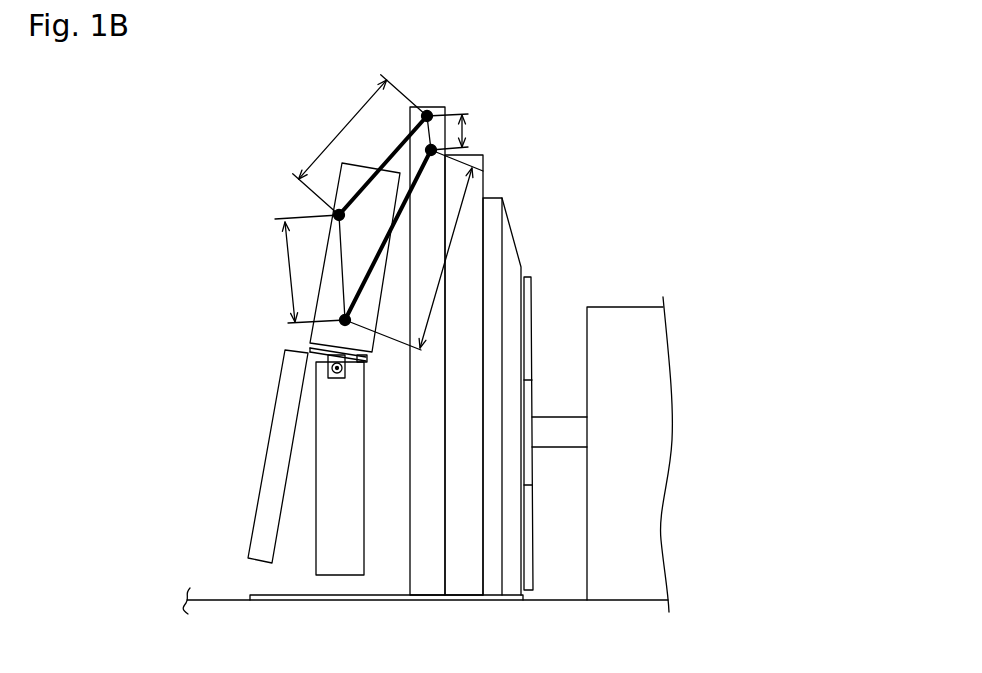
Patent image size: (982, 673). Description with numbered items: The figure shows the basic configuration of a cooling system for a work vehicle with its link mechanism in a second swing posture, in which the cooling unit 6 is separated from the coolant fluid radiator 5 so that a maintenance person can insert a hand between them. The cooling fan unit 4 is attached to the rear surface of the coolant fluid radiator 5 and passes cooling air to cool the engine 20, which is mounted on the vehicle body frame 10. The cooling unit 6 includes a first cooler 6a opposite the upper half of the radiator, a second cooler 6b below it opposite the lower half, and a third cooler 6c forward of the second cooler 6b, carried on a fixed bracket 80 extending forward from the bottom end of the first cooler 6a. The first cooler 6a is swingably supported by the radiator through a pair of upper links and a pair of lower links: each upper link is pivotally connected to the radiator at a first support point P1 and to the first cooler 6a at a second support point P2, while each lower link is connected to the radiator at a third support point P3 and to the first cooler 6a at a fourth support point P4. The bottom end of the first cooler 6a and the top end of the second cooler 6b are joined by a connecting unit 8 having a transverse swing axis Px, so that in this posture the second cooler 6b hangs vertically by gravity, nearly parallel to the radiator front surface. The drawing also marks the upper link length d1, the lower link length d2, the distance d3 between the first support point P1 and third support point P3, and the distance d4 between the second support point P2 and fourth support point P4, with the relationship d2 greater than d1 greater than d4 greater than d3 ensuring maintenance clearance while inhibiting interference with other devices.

The first support point P1 is at (427, 111).
The second support point P2 is at (333, 212).
The third support point P3 is at (431, 156).
The fourth support point P4 is at (348, 325).
The swing axis Px is at (337, 378).
The length of the upper links d1 is at (334, 134).
The length of the lower links d2 is at (427, 326).
The distance between the first support point and the third support point d3 is at (466, 130).
The distance between the second support point and the fourth support point d4 is at (287, 272).
The cooling fan unit 4 is at (510, 220).
The coolant fluid radiator 5 is at (483, 167).
The cooling unit 6 is at (295, 398).
The first cooler 6a is at (308, 340).
The second cooler 6b is at (340, 575).
The third cooler 6c is at (253, 528).
The connecting unit 8 is at (376, 372).
The fixed bracket 80 is at (305, 346).
The vehicle body frame 10 is at (213, 600).
The engine 20 is at (608, 306).